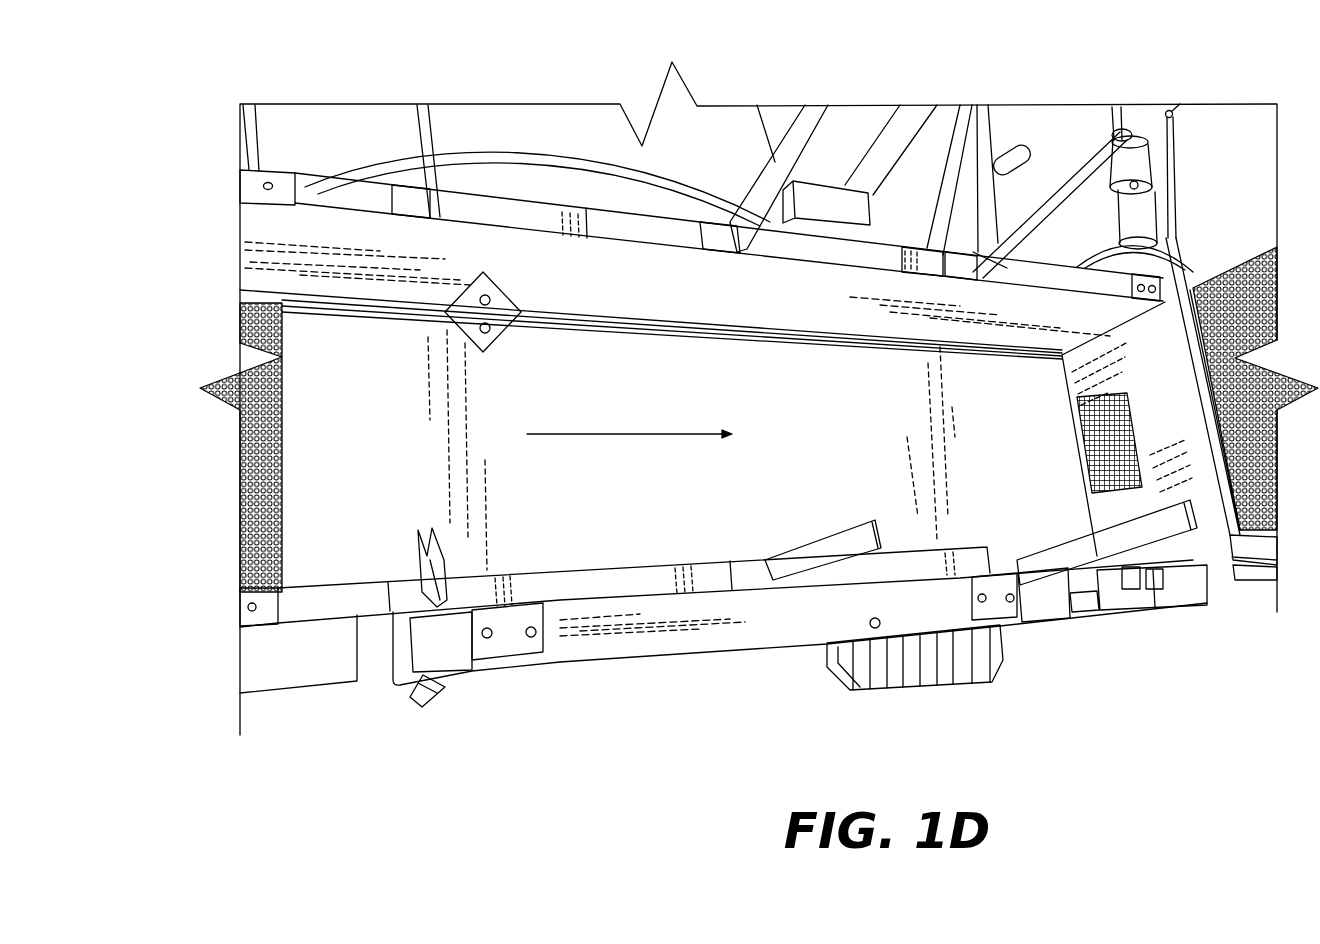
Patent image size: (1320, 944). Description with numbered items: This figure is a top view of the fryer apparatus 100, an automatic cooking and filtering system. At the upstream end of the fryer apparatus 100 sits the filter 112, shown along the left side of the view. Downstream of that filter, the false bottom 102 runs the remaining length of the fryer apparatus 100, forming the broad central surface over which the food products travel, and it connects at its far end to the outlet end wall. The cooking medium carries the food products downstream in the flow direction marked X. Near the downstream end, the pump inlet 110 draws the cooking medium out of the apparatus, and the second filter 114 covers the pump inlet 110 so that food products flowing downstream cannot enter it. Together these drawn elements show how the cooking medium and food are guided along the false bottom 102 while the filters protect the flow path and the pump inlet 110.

The fryer apparatus 100 is at (248, 184).
The false bottom 102 is at (613, 452).
The pump inlet 110 is at (1138, 490).
The filter 112 is at (263, 449).
The second filter 114 is at (1105, 496).